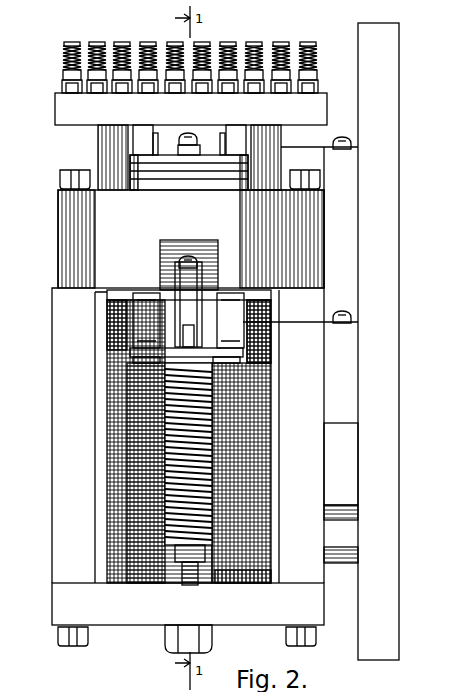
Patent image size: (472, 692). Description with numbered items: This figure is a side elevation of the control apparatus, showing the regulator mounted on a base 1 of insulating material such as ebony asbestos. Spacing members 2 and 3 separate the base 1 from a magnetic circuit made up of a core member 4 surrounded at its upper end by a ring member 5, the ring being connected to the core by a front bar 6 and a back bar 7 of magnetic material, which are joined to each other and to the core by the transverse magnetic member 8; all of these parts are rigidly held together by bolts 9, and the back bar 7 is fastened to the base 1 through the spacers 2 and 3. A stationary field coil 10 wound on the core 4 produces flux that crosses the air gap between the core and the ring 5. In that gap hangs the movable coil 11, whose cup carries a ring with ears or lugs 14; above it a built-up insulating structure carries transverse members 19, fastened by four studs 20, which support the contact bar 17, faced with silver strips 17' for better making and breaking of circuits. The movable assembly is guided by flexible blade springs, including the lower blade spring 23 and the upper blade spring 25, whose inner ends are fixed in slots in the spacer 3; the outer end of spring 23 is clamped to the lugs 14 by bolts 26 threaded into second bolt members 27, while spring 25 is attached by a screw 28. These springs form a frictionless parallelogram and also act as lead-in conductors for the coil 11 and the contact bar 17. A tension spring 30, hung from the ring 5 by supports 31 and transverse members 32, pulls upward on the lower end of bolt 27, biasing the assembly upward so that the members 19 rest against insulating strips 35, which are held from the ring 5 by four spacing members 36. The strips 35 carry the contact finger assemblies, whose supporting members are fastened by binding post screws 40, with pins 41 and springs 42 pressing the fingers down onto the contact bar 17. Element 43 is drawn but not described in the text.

The base 1 is at (390, 460).
The spacing member 2 is at (341, 515).
The spacing member 3 is at (341, 423).
The core member 4 is at (271, 296).
The ring member 5 is at (70, 230).
The front bar 6 is at (58, 450).
The back bar 7 is at (314, 572).
The transverse magnetic member 8 is at (134, 612).
The bolts 9 is at (72, 170).
The stationary field coil 10 is at (112, 399).
The movable coil 11 is at (172, 240).
The ears or lugs 14 is at (205, 268).
The contact bar 17 is at (335, 98).
The facing strips 17' is at (335, 79).
The transverse members 19 is at (143, 125).
The studs 20 is at (158, 143).
The blade spring member 23 is at (300, 323).
The upper blade spring member 25 is at (330, 147).
The bolts 26 is at (180, 262).
The second bolt members 27 is at (190, 585).
The screw 28 is at (196, 135).
The tension spring 30 is at (215, 467).
The supports 31 is at (188, 320).
The transverse members 32 is at (271, 362).
The strips of insulating material 35 is at (56, 113).
The spacing members 36 is at (98, 140).
The binding post screws 40 is at (64, 75).
The pins 41 is at (122, 42).
The springs 42 is at (64, 55).
The block 43 is at (62, 86).